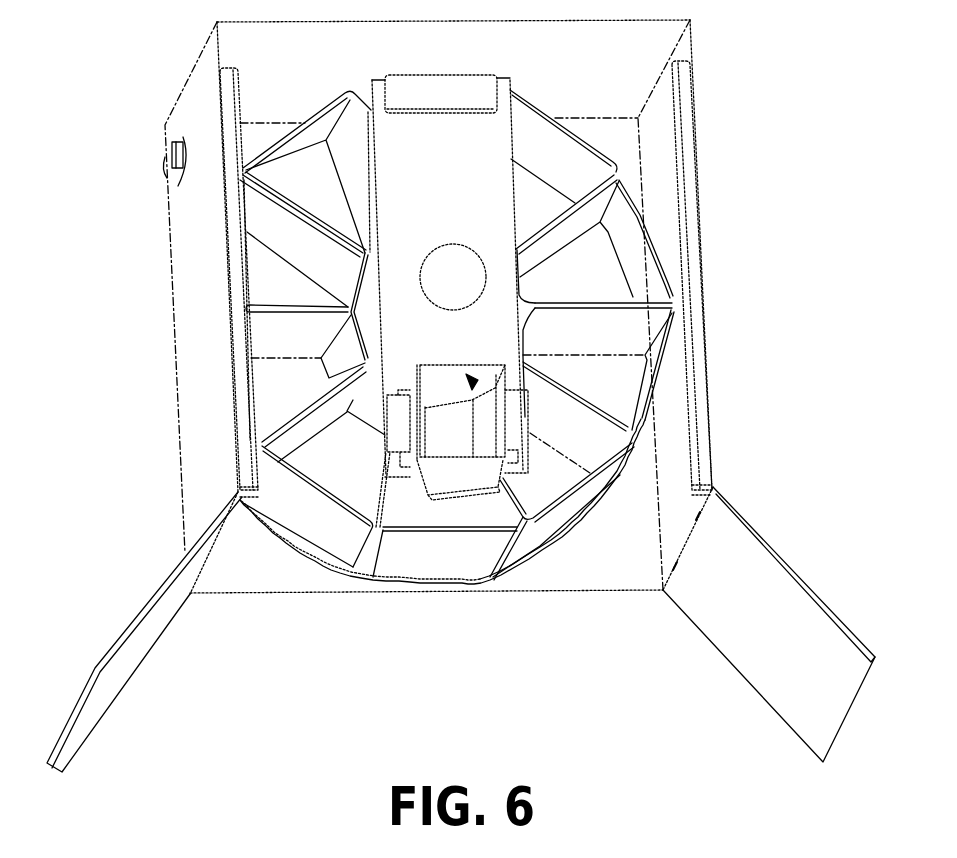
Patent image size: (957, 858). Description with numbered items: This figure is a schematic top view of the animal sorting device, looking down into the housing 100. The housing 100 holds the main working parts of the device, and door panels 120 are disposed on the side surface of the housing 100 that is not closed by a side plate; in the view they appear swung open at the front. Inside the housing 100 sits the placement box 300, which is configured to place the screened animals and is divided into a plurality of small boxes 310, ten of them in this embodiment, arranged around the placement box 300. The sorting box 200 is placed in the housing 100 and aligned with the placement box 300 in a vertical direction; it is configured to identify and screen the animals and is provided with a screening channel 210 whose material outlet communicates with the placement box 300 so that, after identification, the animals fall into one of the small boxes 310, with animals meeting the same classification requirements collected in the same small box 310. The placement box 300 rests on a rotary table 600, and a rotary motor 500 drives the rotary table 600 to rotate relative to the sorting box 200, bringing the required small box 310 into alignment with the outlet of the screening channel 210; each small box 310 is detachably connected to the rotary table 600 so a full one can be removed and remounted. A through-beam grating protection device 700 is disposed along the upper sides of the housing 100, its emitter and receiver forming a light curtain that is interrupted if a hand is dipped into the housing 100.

The housing 100 is at (578, 570).
The door panel 120 is at (133, 670).
The sorting box 200 is at (420, 385).
The screening channel 210 is at (469, 376).
The placement box 300 is at (553, 157).
The small box 310 is at (620, 260).
The rotary motor 500 is at (462, 280).
The rotary table 600 is at (427, 580).
The through-beam grating protection device 700 is at (220, 88).